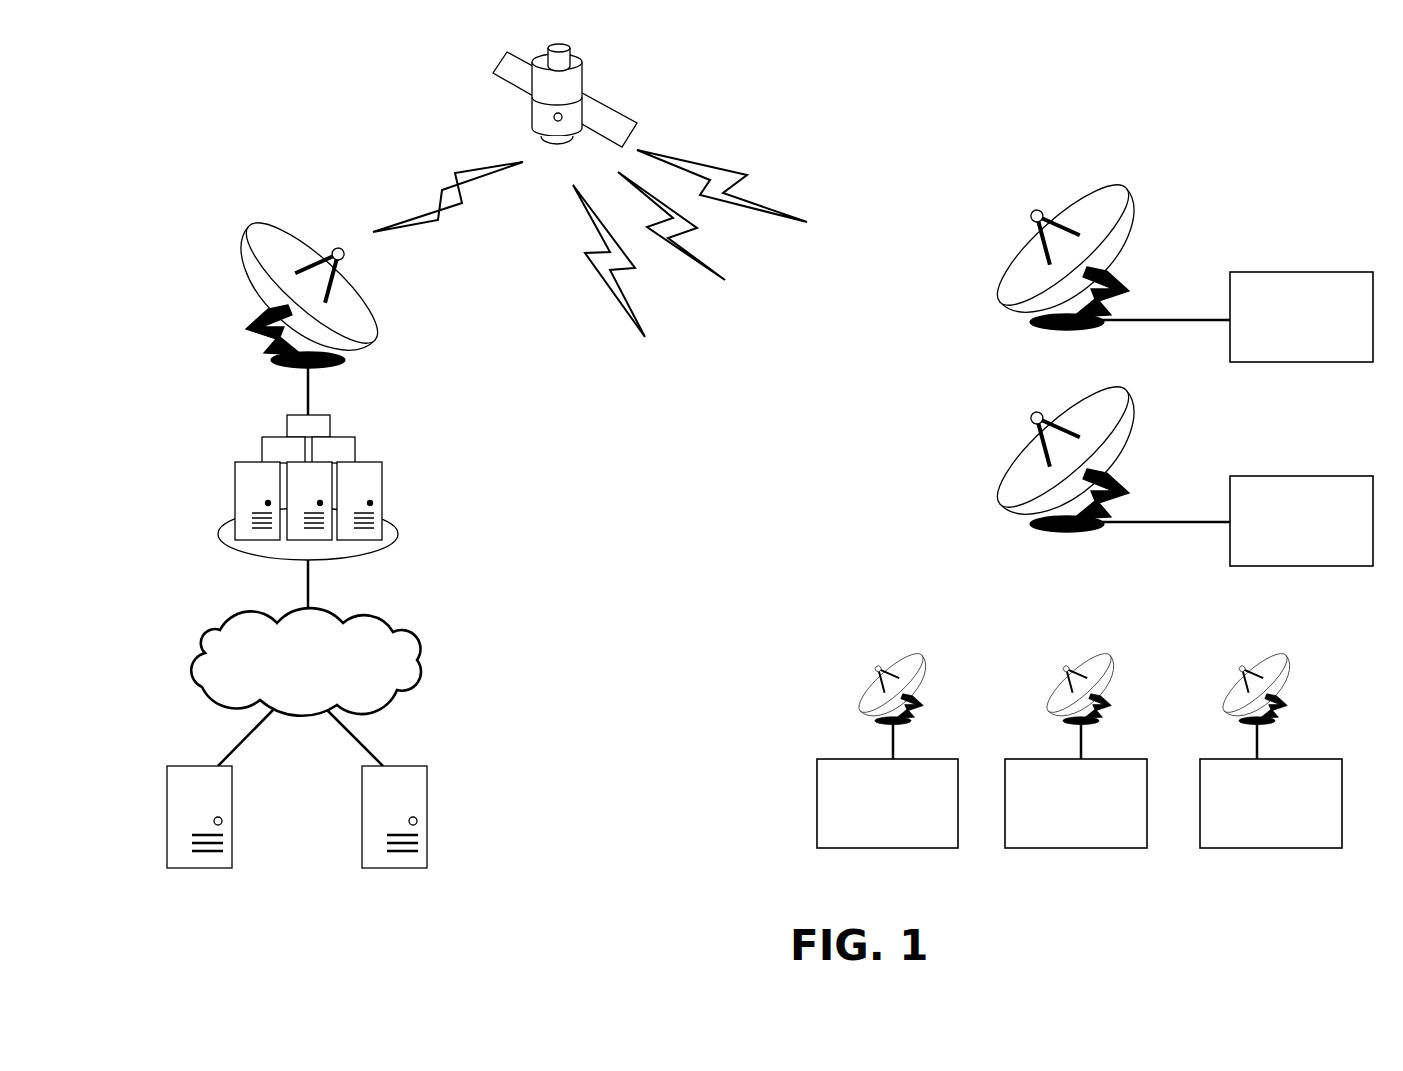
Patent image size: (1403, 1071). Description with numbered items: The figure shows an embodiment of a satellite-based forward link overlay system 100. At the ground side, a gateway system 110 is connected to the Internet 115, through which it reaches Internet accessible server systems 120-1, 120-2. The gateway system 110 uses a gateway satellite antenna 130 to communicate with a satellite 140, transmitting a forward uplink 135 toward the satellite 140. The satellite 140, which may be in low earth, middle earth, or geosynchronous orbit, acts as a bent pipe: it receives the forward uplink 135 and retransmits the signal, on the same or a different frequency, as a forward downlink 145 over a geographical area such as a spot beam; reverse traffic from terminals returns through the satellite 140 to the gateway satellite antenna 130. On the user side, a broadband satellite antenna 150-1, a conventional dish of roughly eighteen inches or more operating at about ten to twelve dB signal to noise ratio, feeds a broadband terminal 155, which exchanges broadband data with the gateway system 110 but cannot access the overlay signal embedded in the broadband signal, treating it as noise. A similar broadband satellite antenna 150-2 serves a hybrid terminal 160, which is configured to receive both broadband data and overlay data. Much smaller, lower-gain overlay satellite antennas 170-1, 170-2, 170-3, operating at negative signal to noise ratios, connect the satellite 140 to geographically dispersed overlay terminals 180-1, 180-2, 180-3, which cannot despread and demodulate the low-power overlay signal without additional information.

The satellite-based forward link overlay system 100 is at (226, 108).
The gateway system 110 is at (255, 462).
The Internet 115 is at (218, 625).
The Internet accessible server system 120-1 is at (200, 766).
The Internet accessible server system 120-2 is at (362, 820).
The gateway satellite antenna 130 is at (250, 324).
The forward uplink 135 is at (447, 173).
The satellite 140 is at (585, 92).
The forward downlink 145 is at (572, 318).
The broadband satellite antenna 150-1 is at (1090, 188).
The broadband satellite antenna 150-2 is at (1090, 390).
The broadband terminal 155 is at (1301, 317).
The hybrid terminal 160 is at (1301, 521).
The overlay satellite antenna 170-1 is at (900, 656).
The overlay satellite antenna 170-2 is at (1082, 656).
The overlay satellite antenna 170-3 is at (1260, 656).
The overlay terminal 180-1 is at (887, 803).
The overlay terminal 180-2 is at (1076, 803).
The overlay terminal 180-3 is at (1271, 803).